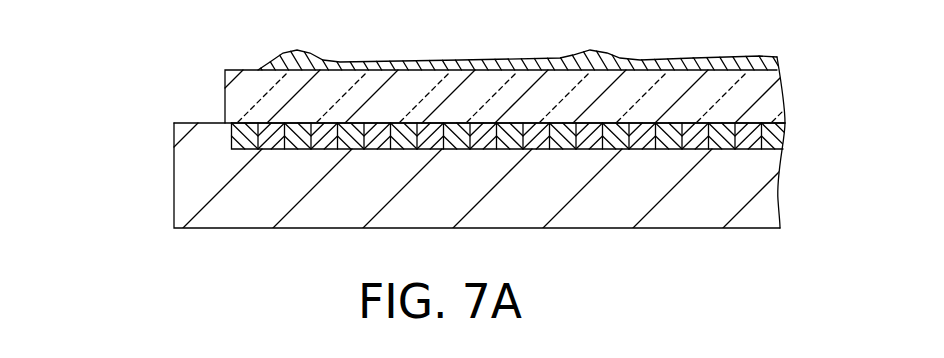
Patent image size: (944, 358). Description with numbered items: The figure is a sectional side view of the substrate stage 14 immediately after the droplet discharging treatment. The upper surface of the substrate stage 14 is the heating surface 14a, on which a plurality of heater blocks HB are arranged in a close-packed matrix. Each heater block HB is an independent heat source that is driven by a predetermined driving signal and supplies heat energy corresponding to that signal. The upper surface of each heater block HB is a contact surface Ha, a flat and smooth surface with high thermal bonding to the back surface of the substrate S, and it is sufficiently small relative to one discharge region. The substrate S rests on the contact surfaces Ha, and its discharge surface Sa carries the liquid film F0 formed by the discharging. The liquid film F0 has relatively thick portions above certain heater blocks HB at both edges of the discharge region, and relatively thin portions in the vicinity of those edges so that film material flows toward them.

The substrate stage 14 is at (174, 153).
The heating surface 14a is at (180, 123).
The substrate S is at (225, 79).
The discharge surface Sa is at (258, 69).
The liquid film F0 is at (726, 57).
The contact surface Ha is at (405, 123).
The heater block HB is at (304, 149).